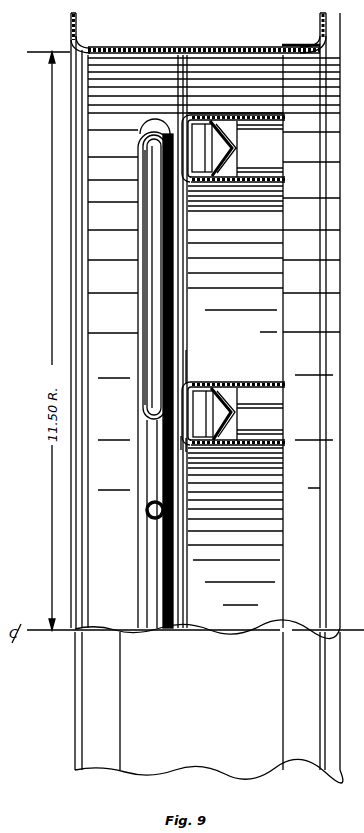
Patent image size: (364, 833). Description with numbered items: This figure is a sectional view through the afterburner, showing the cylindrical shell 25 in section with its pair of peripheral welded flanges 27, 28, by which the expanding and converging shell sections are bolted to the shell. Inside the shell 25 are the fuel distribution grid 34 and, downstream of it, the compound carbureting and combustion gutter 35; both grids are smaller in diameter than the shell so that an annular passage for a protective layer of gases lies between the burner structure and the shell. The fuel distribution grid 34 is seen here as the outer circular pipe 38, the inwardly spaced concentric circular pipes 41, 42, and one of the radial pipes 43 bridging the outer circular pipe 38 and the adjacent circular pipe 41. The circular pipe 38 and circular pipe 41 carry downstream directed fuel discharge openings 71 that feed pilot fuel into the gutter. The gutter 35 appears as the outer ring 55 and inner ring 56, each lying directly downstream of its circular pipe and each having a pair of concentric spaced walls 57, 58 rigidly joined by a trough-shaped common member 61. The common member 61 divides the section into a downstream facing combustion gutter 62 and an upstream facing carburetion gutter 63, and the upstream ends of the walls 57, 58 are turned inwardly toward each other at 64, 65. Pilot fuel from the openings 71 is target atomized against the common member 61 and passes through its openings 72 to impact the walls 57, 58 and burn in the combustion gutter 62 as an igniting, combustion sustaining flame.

The cylindrical shell 25 is at (197, 48).
The peripheral welded flange 27 is at (78, 26).
The peripheral welded flange 28 is at (320, 30).
The fuel distribution grid 34 is at (155, 118).
The compound carbureting and combustion gutter 35 is at (233, 115).
The circular pipe 38 is at (143, 143).
The circular pipe 41 is at (147, 416).
The circular pipe 42 is at (162, 506).
The radial pipe 43 is at (147, 298).
The outer ring 55 is at (238, 182).
The inner ring 56 is at (243, 380).
The wall 57 is at (273, 116).
The wall 58 is at (268, 166).
The common member 61 is at (238, 148).
The combustion gutter 62 is at (284, 134).
The carburetion gutter 63 is at (208, 117).
The inwardly turned end 64 is at (193, 347).
The inwardly turned end 65 is at (186, 452).
The fuel discharge opening 71 is at (157, 132).
The opening 72 is at (223, 156).